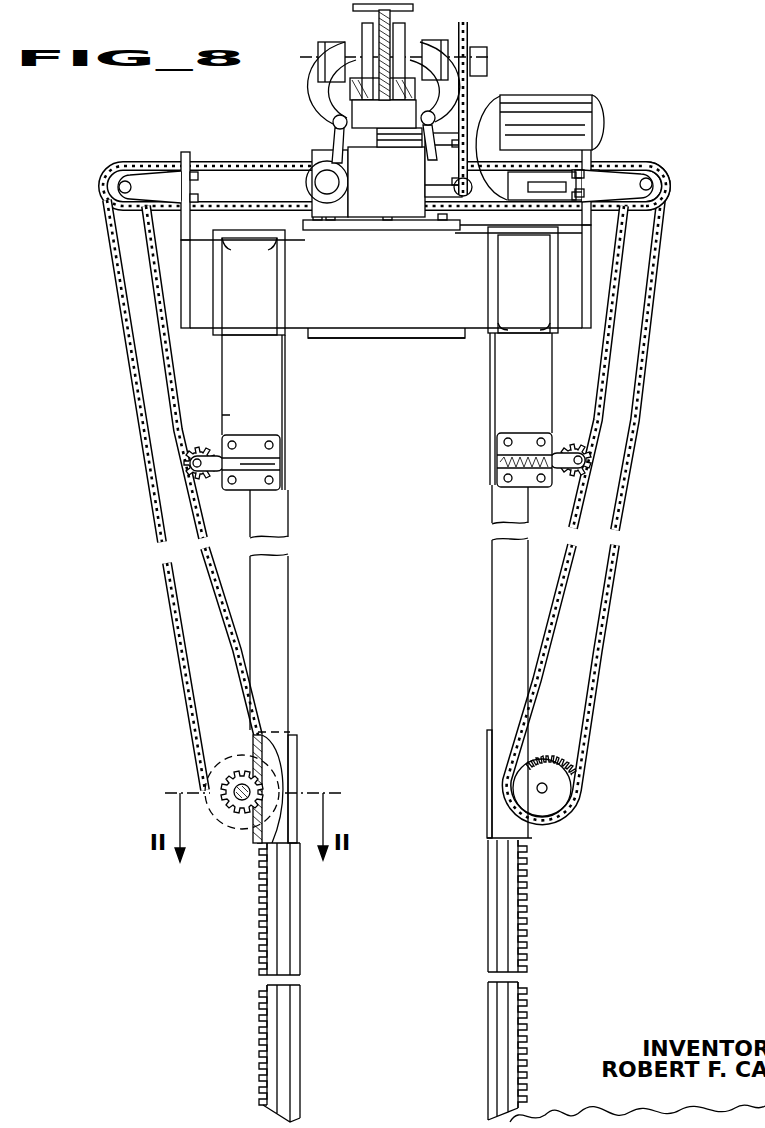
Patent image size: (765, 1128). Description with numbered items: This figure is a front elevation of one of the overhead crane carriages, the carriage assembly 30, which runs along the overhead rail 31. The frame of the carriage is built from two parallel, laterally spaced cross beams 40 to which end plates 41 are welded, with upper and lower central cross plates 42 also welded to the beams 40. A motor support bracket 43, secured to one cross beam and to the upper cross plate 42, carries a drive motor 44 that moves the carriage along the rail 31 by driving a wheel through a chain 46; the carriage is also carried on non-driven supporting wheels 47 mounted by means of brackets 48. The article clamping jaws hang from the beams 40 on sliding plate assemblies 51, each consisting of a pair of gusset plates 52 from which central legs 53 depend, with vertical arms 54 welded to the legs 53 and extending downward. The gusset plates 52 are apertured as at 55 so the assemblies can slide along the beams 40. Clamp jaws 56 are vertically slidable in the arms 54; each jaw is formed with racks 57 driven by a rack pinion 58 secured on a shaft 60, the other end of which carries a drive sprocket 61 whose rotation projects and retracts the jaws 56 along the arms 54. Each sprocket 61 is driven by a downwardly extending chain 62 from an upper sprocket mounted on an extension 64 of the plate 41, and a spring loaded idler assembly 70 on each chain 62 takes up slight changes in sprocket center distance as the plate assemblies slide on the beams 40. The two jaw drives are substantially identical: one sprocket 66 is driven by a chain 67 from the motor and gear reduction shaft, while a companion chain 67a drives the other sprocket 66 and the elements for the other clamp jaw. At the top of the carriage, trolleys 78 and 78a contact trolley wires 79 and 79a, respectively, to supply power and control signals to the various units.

The carriage assembly 30 is at (378, 342).
The overhead rail 31 is at (378, 26).
The cross beams 40 is at (333, 294).
The end plates 41 is at (188, 305).
The central cross plates 42 is at (413, 233).
The motor support bracket 43 is at (482, 219).
The drive motor 44 is at (558, 107).
The chain 46 is at (468, 42).
The supporting wheels 47 is at (350, 50).
The brackets 48 is at (366, 194).
The sliding plate assemblies 51 is at (292, 378).
The gusset plates 52 is at (282, 320).
The central legs 53 is at (230, 397).
The vertical arms 54 is at (277, 577).
The apertures 55 is at (279, 243).
The clamp jaws 56 is at (295, 1013).
The racks 57 is at (262, 1013).
The rack pinion 58 is at (244, 812).
The shaft 60 is at (242, 784).
The drive sprocket 61 is at (222, 763).
The chain 62 is at (167, 578).
The extension 64 is at (181, 156).
The sprocket 66 is at (107, 190).
The chain 67 is at (246, 162).
The chain 67a is at (644, 160).
The spring loaded idler assembly 70 is at (213, 488).
The trolley 78 is at (404, 58).
The trolley 78a is at (338, 56).
The trolley wire 79 is at (400, 88).
The trolley wire 79a is at (358, 92).